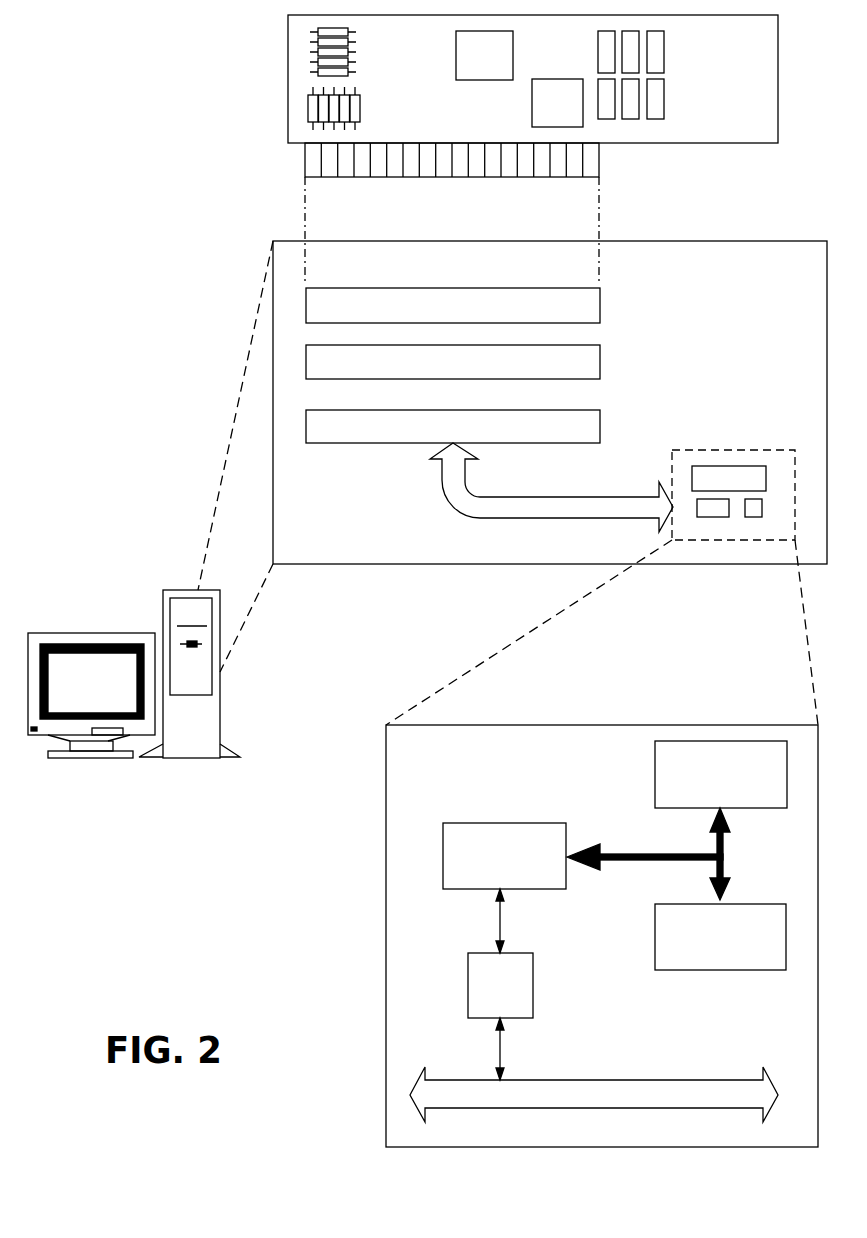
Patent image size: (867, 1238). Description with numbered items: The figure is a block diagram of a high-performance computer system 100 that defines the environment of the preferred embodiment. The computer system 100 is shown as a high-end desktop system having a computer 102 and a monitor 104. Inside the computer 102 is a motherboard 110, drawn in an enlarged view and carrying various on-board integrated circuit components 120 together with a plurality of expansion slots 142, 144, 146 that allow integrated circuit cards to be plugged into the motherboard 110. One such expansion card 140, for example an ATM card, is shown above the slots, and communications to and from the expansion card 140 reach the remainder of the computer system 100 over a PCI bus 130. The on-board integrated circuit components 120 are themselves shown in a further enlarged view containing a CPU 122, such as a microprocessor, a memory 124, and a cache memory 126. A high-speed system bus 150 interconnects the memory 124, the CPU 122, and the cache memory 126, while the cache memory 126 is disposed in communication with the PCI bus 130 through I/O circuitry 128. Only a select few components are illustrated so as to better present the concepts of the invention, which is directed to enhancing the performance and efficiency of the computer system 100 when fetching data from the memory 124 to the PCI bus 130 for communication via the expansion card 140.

The computer system 100 is at (100, 540).
The computer 102 is at (220, 672).
The monitor 104 is at (92, 758).
The motherboard 110 is at (688, 240).
The on-board integrated circuit components 120 is at (693, 450).
The CPU 122 is at (680, 970).
The memory 124 is at (653, 775).
The cache memory 126 is at (477, 823).
The I/O circuitry 128 is at (513, 953).
The PCI bus 130 is at (495, 497).
The expansion card 140 is at (680, 143).
The expansion slot 142 is at (453, 305).
The expansion slot 144 is at (453, 362).
The expansion slot 146 is at (453, 426).
The system bus 150 is at (625, 857).